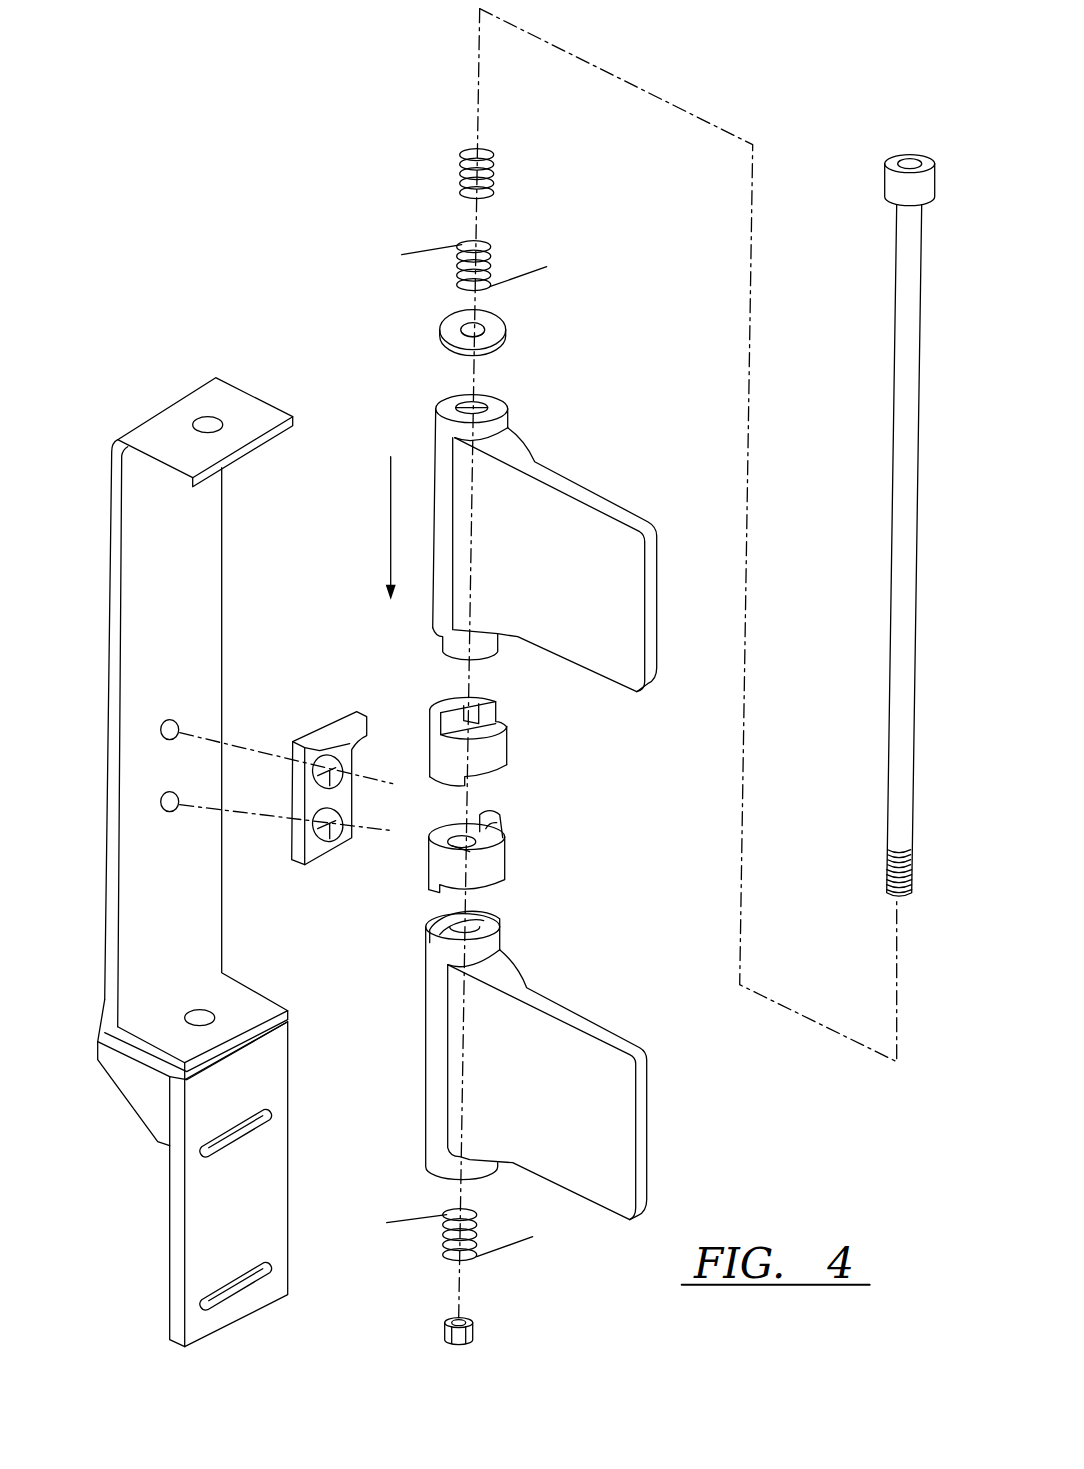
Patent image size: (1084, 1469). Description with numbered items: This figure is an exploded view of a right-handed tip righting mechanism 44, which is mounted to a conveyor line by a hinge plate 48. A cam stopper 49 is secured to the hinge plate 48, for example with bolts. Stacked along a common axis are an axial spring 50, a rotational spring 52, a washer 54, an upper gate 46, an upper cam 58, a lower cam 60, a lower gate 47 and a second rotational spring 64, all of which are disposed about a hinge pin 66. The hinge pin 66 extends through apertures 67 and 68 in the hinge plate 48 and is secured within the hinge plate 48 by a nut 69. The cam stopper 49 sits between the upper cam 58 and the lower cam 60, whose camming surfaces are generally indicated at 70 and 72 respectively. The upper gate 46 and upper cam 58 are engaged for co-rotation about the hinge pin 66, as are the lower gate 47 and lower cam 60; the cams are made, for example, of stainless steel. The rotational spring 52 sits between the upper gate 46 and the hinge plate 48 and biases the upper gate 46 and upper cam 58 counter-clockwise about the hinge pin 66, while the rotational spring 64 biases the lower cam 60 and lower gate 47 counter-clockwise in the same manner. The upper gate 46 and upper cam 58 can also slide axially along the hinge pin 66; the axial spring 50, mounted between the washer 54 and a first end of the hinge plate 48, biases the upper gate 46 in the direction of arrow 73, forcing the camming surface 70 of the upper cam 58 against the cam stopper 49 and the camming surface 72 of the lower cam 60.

The tip righting mechanism 44 is at (276, 253).
The upper gate 46 is at (532, 603).
The lower gate 47 is at (562, 1104).
The hinge plate 48 is at (245, 849).
The cam stopper 49 is at (328, 735).
The axial spring 50 is at (475, 152).
The rotational spring 52 is at (473, 242).
The washer 54 is at (448, 322).
The upper cam 58 is at (509, 740).
The lower cam 60 is at (503, 843).
The rotational spring 64 is at (437, 1235).
The hinge pin 66 is at (907, 413).
The aperture 67 is at (209, 422).
The aperture 68 is at (200, 1020).
The nut 69 is at (447, 1317).
The camming surface 70 is at (500, 771).
The camming surface 72 is at (505, 814).
The arrow 73 is at (390, 488).